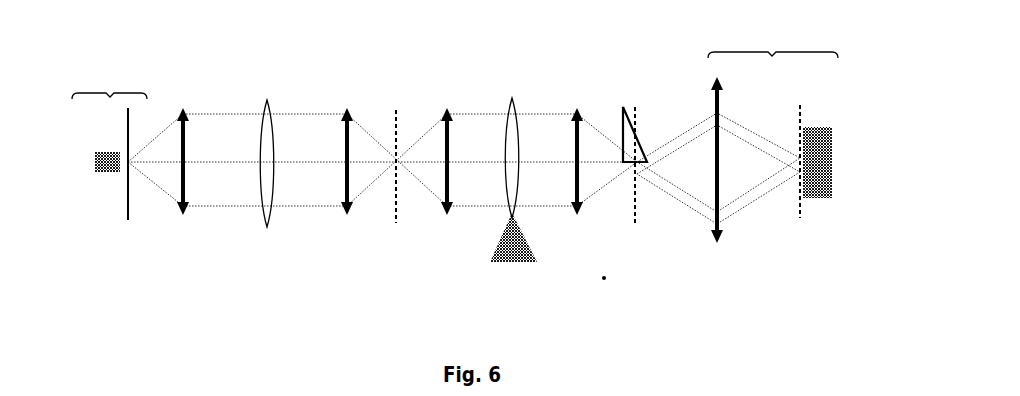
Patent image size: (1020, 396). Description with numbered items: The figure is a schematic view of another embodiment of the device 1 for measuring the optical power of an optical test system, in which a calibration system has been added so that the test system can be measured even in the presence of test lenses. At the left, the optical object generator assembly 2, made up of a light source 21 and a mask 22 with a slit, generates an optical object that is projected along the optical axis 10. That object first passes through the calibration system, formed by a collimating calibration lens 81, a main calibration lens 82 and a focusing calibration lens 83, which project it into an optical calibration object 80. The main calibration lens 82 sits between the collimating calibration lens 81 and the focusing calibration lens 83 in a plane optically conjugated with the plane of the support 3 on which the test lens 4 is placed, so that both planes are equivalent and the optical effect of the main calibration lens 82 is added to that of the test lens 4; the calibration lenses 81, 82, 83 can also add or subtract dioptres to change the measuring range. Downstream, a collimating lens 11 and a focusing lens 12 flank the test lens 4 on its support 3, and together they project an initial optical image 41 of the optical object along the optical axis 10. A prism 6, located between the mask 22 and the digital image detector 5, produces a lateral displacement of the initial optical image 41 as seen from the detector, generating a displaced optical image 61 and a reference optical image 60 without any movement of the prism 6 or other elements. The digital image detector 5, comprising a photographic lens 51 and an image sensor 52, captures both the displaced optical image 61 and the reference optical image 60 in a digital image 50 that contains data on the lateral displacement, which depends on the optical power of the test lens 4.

The device 1 is at (604, 278).
The optical object generator assembly 2 is at (109, 79).
The light source 21 is at (94, 160).
The mask 22 is at (126, 206).
The support 3 is at (513, 252).
The test lens 4 is at (505, 145).
The digital image detector 5 is at (773, 37).
The prism 6 is at (622, 147).
The optical axis 10 is at (492, 163).
The collimating lens 11 is at (443, 147).
The focusing lens 12 is at (575, 142).
The initial optical image 41 is at (637, 227).
The digital image 50 is at (800, 210).
The photographic lens 51 is at (712, 138).
The image sensor 52 is at (834, 167).
The reference optical image 60 is at (765, 181).
The displaced optical image 61 is at (780, 197).
The optical calibration object 80 is at (395, 208).
The collimating calibration lens 81 is at (182, 140).
The main calibration lens 82 is at (262, 146).
The focusing calibration lens 83 is at (344, 143).